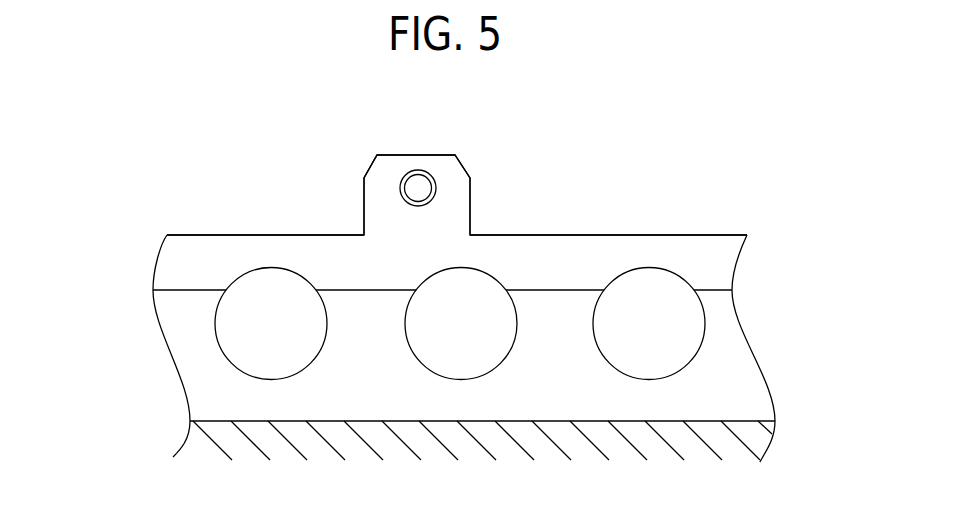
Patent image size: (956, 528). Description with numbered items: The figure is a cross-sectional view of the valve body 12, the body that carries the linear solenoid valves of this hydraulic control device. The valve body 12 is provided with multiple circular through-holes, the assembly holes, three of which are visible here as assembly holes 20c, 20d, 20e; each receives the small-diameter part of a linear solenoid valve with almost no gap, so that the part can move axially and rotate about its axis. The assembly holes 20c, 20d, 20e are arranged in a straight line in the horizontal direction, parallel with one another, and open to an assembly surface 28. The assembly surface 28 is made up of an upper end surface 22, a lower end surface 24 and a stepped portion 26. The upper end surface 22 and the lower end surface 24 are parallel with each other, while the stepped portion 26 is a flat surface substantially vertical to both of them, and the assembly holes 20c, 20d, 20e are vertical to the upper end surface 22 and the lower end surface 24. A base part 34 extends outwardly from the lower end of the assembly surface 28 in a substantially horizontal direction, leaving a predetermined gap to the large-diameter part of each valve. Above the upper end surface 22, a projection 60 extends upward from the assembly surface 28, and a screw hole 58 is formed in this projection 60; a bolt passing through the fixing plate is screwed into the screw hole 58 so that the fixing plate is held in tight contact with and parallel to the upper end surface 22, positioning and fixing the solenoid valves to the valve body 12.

The valve body 12 is at (710, 176).
The assembly surface 28 is at (116, 277).
The upper end surface 22 is at (202, 257).
The stepped portion 26 is at (717, 288).
The lower end surface 24 is at (740, 367).
The base part 34 is at (375, 433).
The assembly hole 20c is at (261, 379).
The assembly hole 20d is at (449, 379).
The assembly hole 20e is at (637, 379).
The screw hole 58 is at (413, 182).
The projection 60 is at (379, 198).